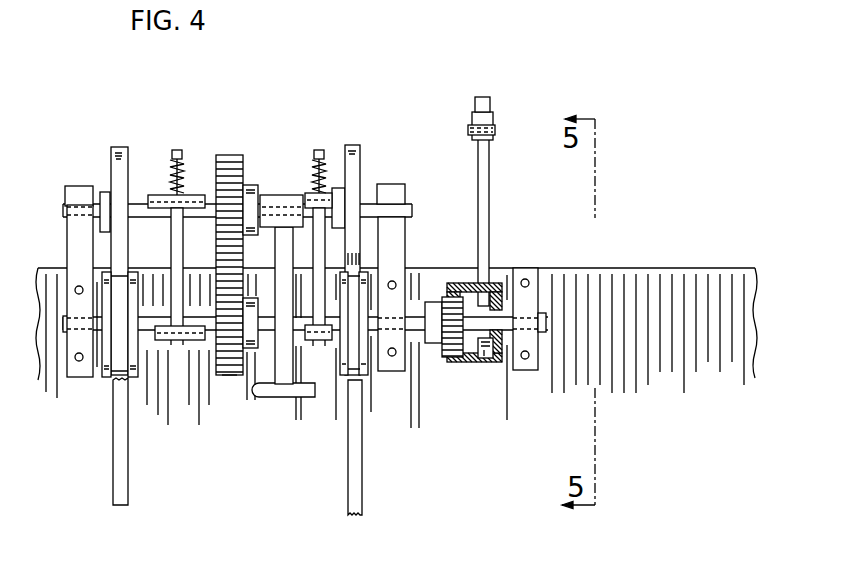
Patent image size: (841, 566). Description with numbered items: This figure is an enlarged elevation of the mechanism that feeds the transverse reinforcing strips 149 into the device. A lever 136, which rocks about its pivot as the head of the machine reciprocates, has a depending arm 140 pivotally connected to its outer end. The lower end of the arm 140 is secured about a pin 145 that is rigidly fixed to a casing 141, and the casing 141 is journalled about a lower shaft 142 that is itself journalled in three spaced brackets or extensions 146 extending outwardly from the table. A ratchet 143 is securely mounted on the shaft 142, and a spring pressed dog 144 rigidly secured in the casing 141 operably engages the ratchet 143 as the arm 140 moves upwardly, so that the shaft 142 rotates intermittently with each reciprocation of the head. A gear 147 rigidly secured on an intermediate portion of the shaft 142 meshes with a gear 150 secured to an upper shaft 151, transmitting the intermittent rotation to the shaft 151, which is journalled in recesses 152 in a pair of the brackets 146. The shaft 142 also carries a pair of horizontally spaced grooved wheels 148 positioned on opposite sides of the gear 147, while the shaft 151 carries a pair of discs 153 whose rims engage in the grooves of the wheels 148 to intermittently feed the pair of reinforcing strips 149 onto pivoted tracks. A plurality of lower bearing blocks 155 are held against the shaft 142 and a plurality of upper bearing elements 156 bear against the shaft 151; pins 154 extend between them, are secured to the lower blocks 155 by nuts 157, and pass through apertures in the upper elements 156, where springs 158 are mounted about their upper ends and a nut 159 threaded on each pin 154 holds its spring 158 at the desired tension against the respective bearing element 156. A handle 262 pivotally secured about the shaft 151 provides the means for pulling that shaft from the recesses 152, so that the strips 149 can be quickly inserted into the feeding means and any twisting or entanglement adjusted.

The lever 136 is at (494, 109).
The depending arm 140 is at (486, 199).
The casing 141 is at (497, 285).
The shaft 142 is at (545, 280).
The ratchet 143 is at (450, 343).
The spring pressed dog 144 is at (454, 295).
The pin 145 is at (490, 358).
The brackets or extensions 146 is at (77, 368).
The gear 147 is at (232, 376).
The grooved wheels 148 is at (135, 377).
The transverse reinforcing strips 149 is at (122, 497).
The gear 150 is at (232, 155).
The shaft 151 is at (413, 212).
The recesses 152 is at (63, 207).
The discs 153 is at (118, 147).
The pins 154 is at (176, 243).
The lower bearing blocks 155 is at (200, 340).
The upper bearing elements 156 is at (158, 195).
The nuts 157 is at (177, 345).
The springs 158 is at (172, 190).
The nut 159 is at (181, 158).
The handle 262 is at (277, 397).